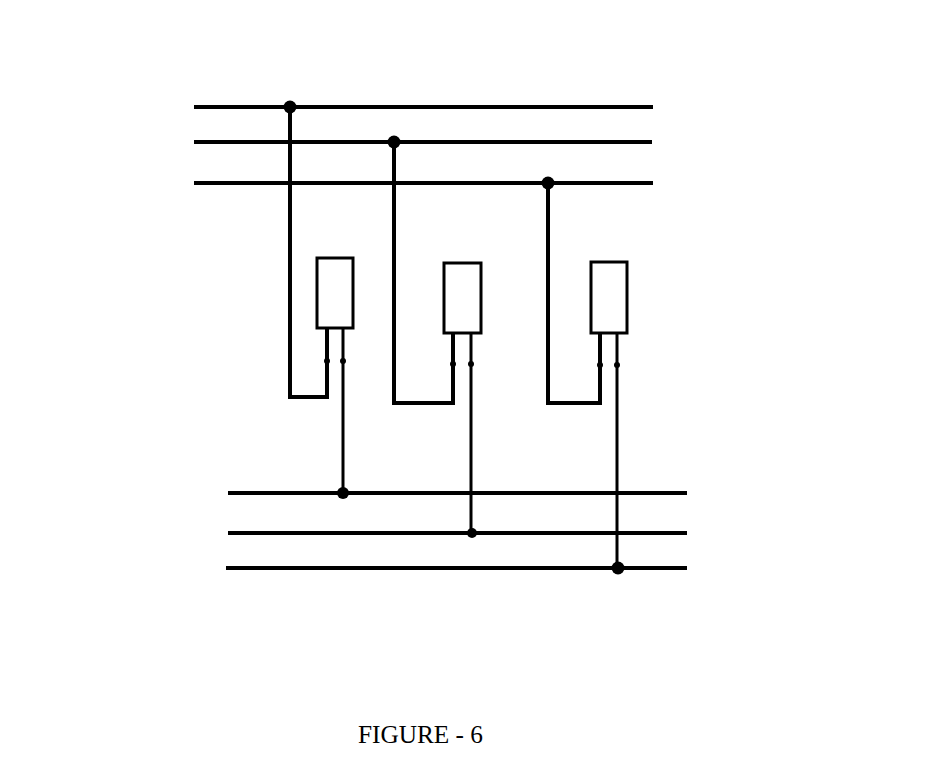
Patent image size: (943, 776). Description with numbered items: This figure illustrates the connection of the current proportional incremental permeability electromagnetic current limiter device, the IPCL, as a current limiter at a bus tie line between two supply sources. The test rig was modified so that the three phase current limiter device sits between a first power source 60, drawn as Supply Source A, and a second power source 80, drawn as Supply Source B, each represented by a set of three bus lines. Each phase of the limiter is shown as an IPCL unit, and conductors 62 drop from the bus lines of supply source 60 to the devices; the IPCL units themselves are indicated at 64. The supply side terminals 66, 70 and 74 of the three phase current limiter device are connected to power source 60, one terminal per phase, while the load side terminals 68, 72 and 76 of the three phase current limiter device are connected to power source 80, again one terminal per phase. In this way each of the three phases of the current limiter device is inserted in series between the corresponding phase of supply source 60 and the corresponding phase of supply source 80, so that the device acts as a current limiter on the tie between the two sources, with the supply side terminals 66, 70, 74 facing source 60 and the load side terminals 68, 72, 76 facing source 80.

The supply source 60 is at (633, 182).
The connecting conductors 62 is at (290, 310).
The IPCL (intelligent power control logic) module 64 is at (628, 302).
The supply side terminal 66 is at (327, 361).
The load side terminal 68 is at (342, 380).
The supply side terminal 70 is at (452, 364).
The load side terminal 72 is at (470, 364).
The supply side terminal 74 is at (601, 367).
The load side terminal 76 is at (620, 367).
The supply source 80 is at (269, 491).